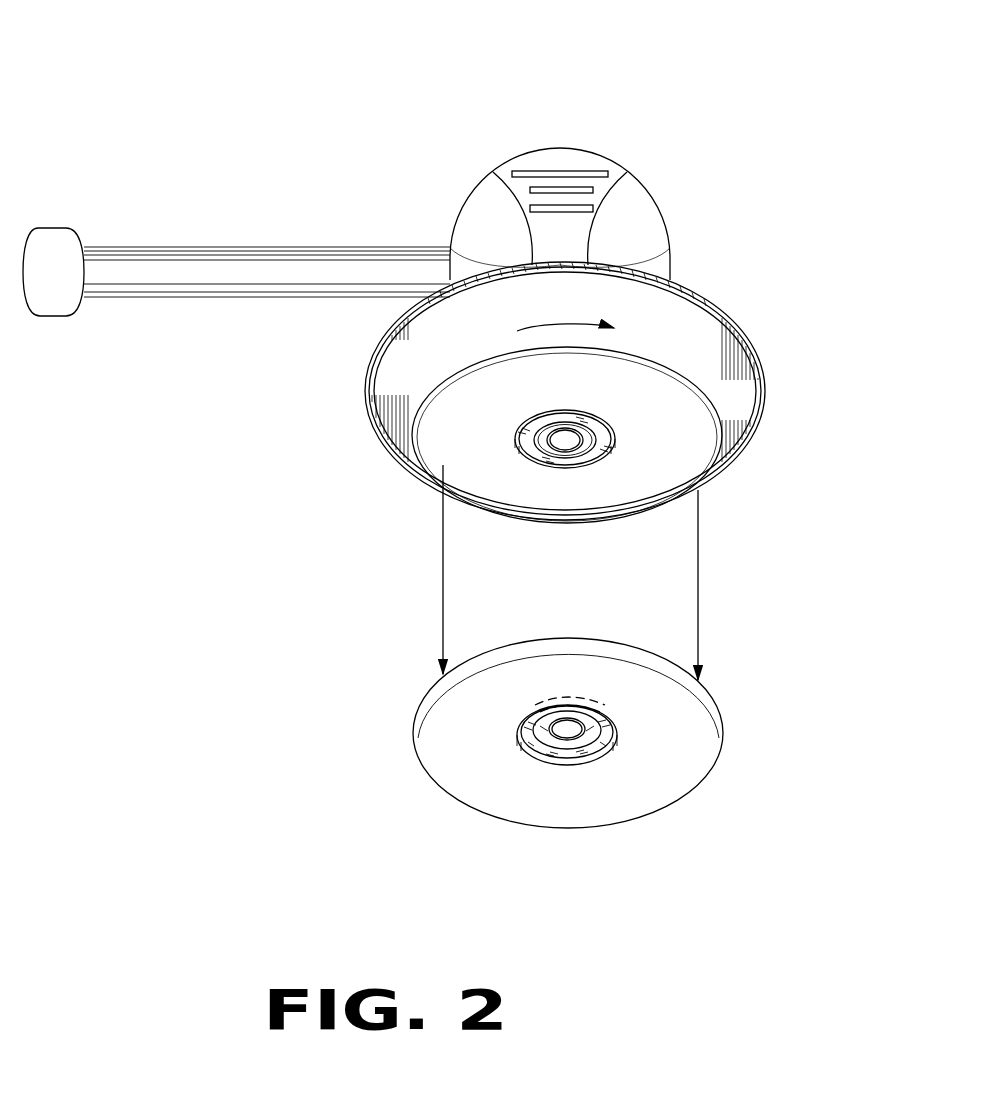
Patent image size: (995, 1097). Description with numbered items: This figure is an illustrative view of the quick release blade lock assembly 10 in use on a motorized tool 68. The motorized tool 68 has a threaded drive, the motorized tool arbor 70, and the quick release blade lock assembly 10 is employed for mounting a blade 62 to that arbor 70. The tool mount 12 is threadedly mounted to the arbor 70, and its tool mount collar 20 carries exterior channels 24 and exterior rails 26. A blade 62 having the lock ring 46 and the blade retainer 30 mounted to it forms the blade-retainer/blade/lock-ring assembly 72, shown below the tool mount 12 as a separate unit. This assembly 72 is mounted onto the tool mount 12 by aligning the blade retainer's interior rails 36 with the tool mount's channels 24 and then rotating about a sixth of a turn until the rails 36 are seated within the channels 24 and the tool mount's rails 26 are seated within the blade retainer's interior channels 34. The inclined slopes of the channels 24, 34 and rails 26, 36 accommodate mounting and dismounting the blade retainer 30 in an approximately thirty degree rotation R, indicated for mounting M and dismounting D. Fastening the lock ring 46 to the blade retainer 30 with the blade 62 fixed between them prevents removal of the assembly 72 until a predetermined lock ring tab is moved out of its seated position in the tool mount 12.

The quick release blade lock assembly 10 is at (655, 86).
The motorized tool 68 is at (516, 158).
The tool mount 12 is at (585, 445).
The motorized tool arbor 70 is at (560, 432).
The tool mount collar 20 is at (556, 433).
The blade retainer collar interior rail 36 is at (562, 430).
The tool mount collar exterior channel 24 is at (571, 431).
The tool mount collar exterior rail 26 is at (575, 432).
The blade retainer collar interior channel 34 is at (581, 440).
The blade 62 is at (713, 443).
The blade-retainer/blade/lock-ring assembly 72 is at (421, 697).
The blade retainer 30 is at (590, 726).
The lock ring 46 is at (567, 697).
The dismount of 72 D is at (516, 332).
The rotation of 72 R is at (562, 346).
The mounting of 72 M is at (610, 329).